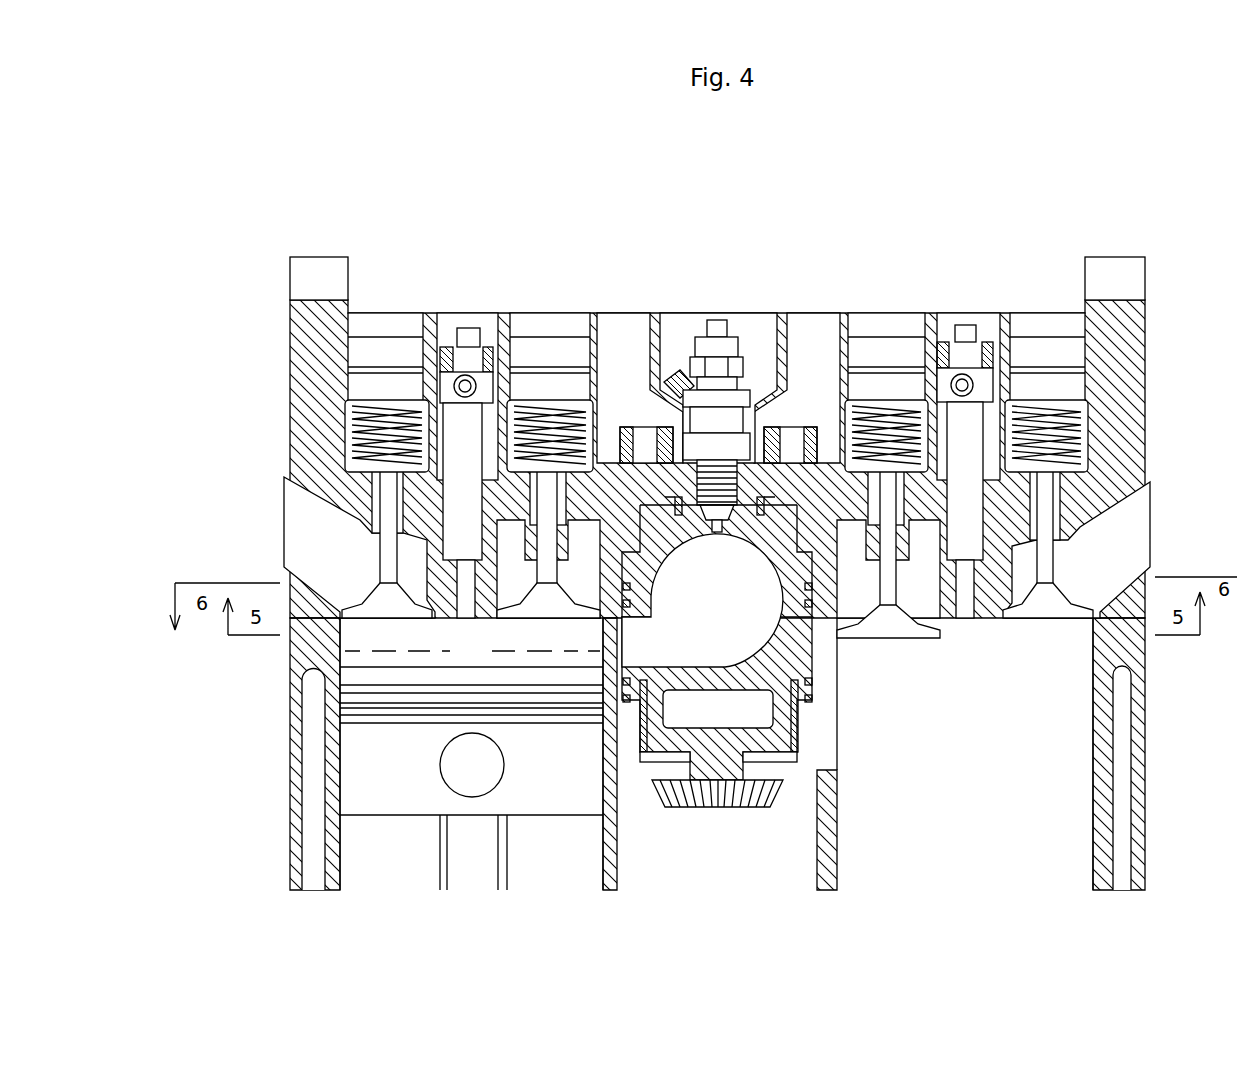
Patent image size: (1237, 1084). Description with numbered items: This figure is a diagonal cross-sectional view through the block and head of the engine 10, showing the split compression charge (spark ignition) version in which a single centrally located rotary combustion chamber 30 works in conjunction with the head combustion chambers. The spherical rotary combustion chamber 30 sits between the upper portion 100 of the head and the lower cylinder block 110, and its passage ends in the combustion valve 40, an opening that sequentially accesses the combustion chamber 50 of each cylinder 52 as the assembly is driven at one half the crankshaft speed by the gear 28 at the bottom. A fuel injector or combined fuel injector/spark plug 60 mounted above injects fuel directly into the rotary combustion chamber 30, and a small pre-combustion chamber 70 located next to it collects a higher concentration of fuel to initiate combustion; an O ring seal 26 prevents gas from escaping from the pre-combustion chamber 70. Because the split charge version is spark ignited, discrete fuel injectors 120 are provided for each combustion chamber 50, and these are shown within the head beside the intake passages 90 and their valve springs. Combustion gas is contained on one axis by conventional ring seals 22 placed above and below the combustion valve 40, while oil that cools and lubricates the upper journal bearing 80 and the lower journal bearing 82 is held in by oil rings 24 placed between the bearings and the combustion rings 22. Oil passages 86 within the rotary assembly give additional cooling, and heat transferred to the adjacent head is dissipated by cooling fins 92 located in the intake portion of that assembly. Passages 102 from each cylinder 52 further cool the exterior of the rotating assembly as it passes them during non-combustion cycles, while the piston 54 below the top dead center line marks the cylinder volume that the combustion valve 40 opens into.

The engine 10 is at (1160, 222).
The cylinder head 100 is at (318, 278).
The cylinder block 110 is at (1140, 722).
The discrete fuel injector 120 is at (487, 478).
The passage 90 is at (634, 357).
The cooling fin 92 is at (662, 447).
The fuel injector/spark plug 60 is at (730, 428).
The O ring seal 26 is at (762, 497).
The pre-combustion chamber 70 is at (718, 528).
The upper journal bearing 80 is at (800, 530).
The lower journal bearing 82 is at (812, 740).
The rotary combustion chamber 30 is at (727, 613).
The combustion valve 40 is at (645, 650).
The oil passage 86 is at (731, 717).
The gear 28 is at (715, 795).
The ring seal 22 is at (623, 586).
The oil ring 24 is at (623, 603).
The combustion chamber 50 is at (411, 643).
The passage 102 is at (616, 635).
The cylinder 52 is at (568, 858).
The piston pin bore 54 is at (568, 770).